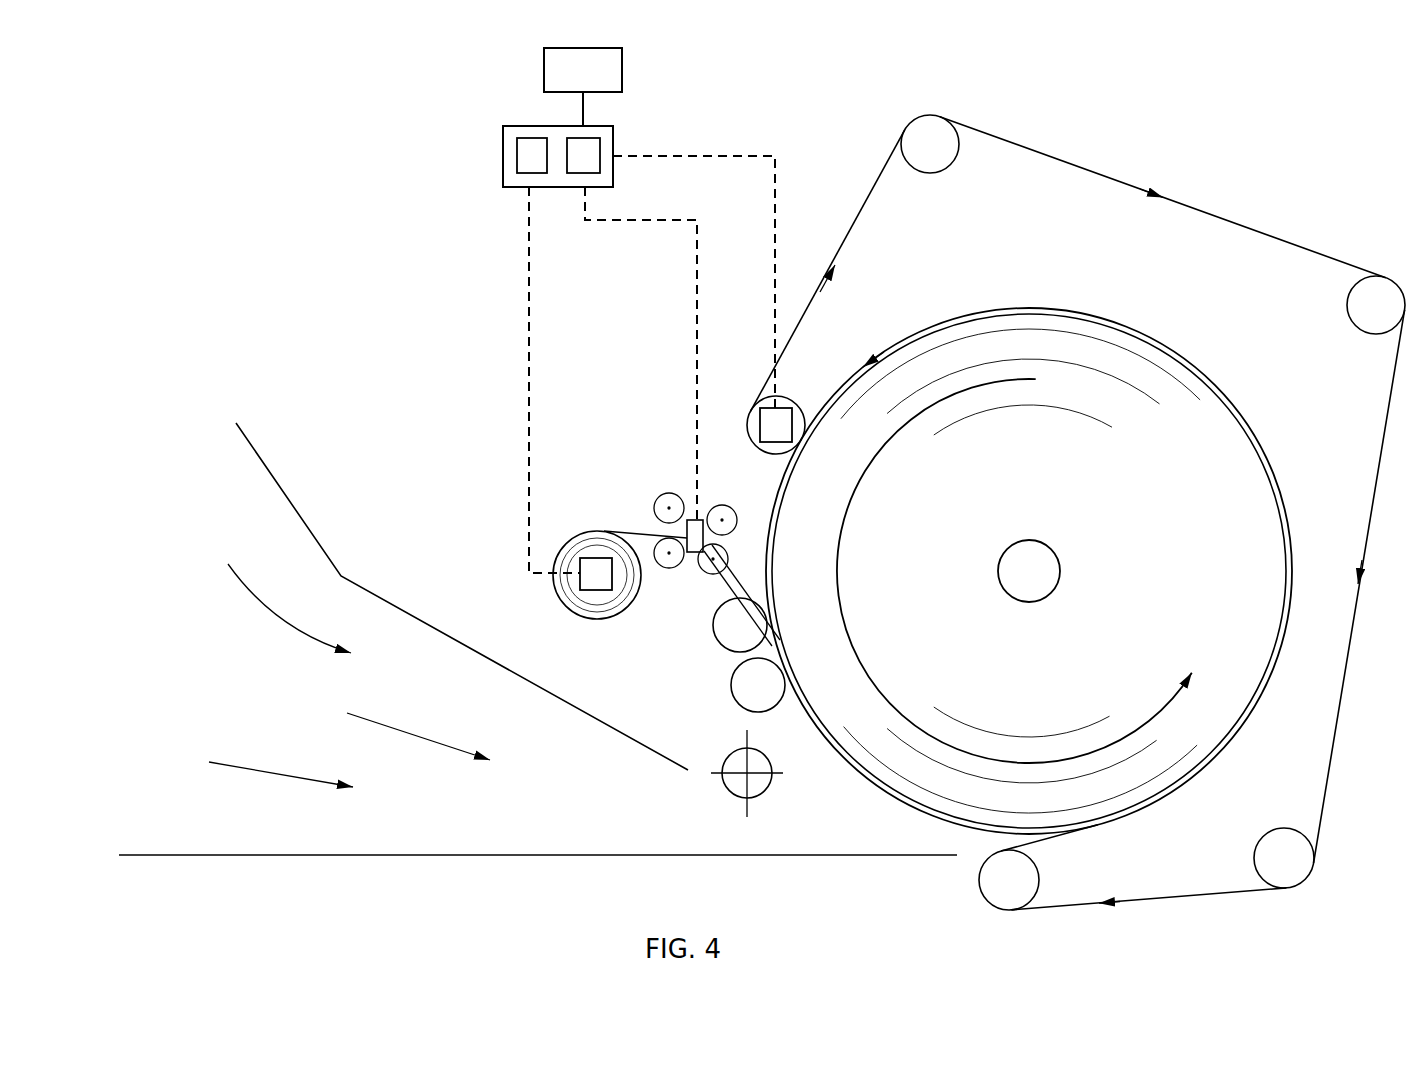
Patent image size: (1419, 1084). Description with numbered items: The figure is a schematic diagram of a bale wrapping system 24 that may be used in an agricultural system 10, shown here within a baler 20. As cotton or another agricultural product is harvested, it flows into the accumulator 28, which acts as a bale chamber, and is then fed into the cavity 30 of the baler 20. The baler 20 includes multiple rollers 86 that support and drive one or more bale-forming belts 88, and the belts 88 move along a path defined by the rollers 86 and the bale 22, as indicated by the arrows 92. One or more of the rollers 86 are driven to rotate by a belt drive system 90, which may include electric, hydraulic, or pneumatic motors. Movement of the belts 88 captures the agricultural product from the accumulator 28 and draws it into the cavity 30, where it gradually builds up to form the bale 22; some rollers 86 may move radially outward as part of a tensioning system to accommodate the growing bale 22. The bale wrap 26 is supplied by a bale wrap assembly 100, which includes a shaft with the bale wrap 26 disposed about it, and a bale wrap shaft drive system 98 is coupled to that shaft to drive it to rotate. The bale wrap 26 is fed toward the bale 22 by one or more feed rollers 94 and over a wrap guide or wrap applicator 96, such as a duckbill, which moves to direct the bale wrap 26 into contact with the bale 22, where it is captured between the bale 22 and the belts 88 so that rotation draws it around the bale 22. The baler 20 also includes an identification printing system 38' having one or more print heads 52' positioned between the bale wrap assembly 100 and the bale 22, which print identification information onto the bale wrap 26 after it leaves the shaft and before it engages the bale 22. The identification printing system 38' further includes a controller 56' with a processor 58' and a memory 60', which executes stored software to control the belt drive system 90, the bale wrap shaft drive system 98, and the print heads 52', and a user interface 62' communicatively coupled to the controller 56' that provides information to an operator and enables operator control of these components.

The printing system 10 is at (1283, 120).
The baler 20 is at (795, 150).
The bale 22 is at (1207, 413).
The bale wrapping system 24 is at (475, 387).
The bale wrap 26 is at (648, 533).
The accumulator 28 is at (400, 604).
The cavity 30 is at (877, 840).
The identification printing system 38' is at (710, 561).
The print head 52' is at (713, 490).
The controller 56' is at (546, 138).
The processor 58' is at (484, 163).
The memory 60' is at (629, 168).
The user interface 62' is at (545, 67).
The rollers 86 is at (920, 135).
The belts 88 is at (1385, 470).
The belt drive system 90 is at (792, 432).
The arrows 92 is at (1172, 190).
The feed rollers 94 is at (660, 498).
The wrap guide 96 is at (730, 588).
The bale wrap shaft drive system 98 is at (597, 591).
The bale wrap assembly 100 is at (597, 618).